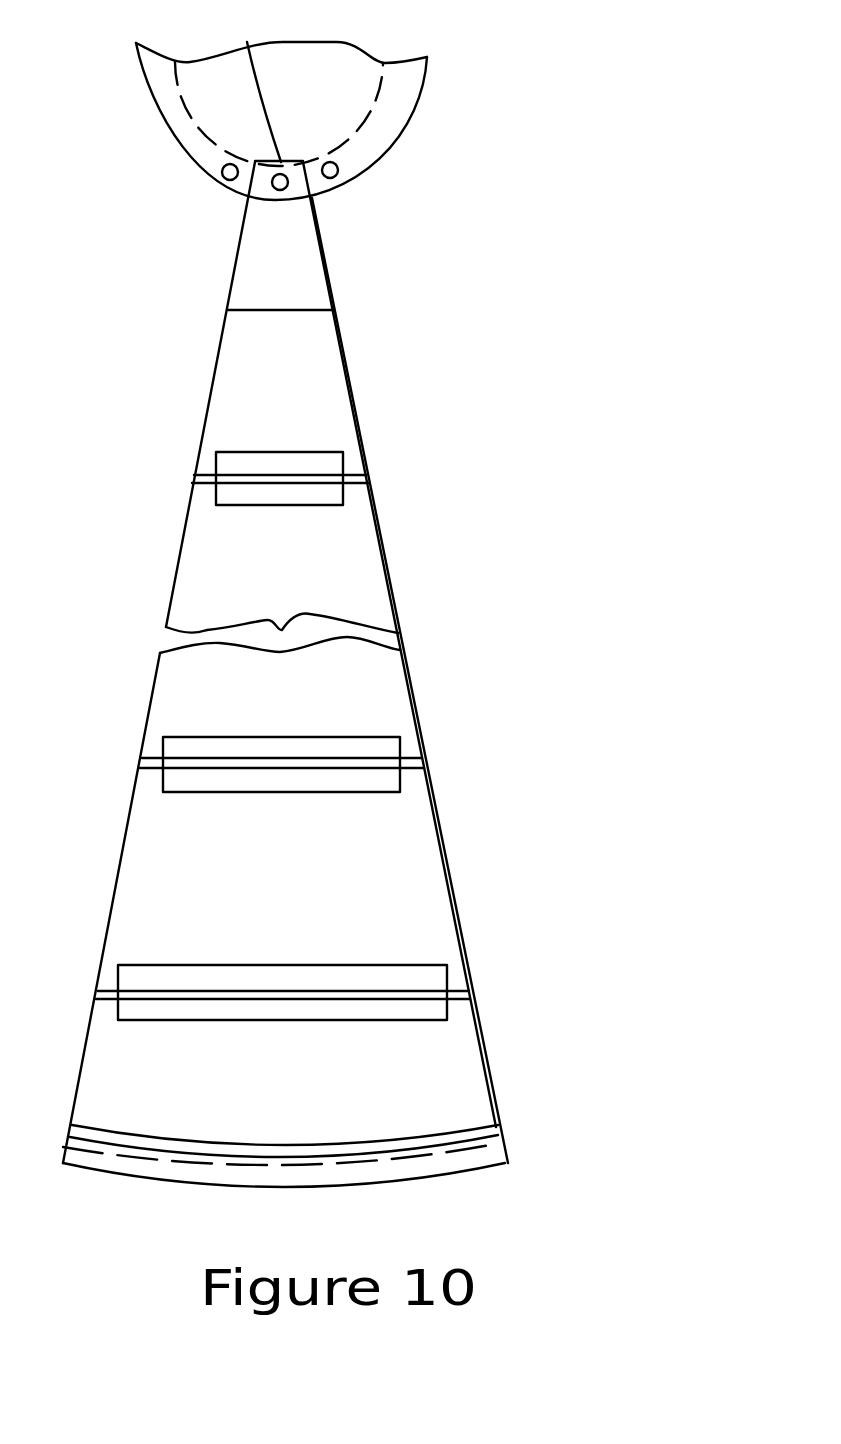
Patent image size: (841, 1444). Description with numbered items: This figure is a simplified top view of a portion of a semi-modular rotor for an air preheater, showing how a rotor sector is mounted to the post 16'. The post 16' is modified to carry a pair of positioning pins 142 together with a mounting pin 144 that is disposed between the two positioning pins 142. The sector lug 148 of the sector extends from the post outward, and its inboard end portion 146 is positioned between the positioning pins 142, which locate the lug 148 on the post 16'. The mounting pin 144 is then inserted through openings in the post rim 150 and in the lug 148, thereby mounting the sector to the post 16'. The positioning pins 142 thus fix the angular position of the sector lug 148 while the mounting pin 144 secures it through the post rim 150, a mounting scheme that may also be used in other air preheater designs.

The post 16' is at (319, 121).
The positioning pins 142 is at (222, 178).
The mounting pin 144 is at (273, 189).
The inboard end portion 146 is at (247, 42).
The sector lug 148 is at (293, 283).
The post rim 150 is at (175, 103).